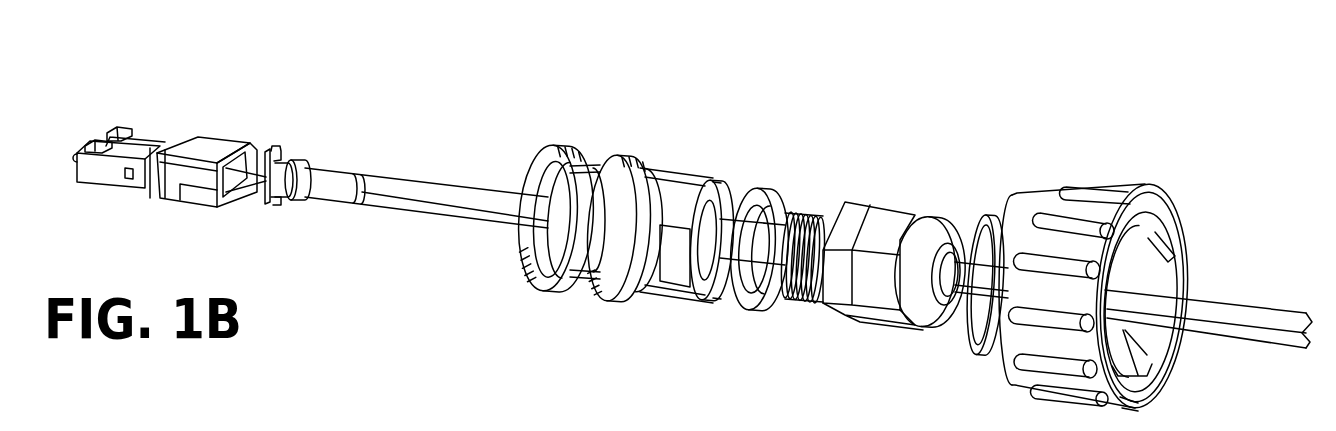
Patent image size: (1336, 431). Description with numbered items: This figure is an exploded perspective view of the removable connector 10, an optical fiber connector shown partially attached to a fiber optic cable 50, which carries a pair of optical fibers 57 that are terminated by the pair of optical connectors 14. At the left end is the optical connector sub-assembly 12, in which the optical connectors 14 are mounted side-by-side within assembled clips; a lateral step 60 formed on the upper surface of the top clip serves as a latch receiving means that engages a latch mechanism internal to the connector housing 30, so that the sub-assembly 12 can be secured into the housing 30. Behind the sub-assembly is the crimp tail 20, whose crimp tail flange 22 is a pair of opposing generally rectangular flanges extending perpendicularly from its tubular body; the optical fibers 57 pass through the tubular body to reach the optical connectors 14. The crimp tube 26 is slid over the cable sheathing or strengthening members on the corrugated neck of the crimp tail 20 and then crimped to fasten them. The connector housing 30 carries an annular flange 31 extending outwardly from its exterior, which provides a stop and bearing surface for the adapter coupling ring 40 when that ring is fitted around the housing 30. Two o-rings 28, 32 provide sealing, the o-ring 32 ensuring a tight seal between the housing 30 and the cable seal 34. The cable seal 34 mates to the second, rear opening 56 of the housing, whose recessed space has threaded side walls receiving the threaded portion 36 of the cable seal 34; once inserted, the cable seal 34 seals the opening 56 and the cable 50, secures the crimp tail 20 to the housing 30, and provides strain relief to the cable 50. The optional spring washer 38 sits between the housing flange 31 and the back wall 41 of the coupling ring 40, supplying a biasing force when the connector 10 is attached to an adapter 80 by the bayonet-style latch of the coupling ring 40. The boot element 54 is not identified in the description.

The removable connector 10 is at (1127, 70).
The optical connector sub-assembly 12 is at (203, 105).
The optical connectors 14 is at (158, 140).
The crimp tail 20 is at (284, 152).
The crimp tail flange 22 is at (268, 208).
The crimp tube 26 is at (337, 190).
The o-ring 28 is at (550, 285).
The connector housing 30 is at (643, 266).
The annular flange 31 is at (627, 150).
The o-ring 32 is at (775, 197).
The cable seal 34 is at (893, 217).
The threaded portion 36 is at (803, 298).
The spring washer 38 is at (975, 345).
The adapter coupling ring 40 is at (1170, 217).
The back wall 41 is at (1128, 328).
The fiber optic cable 50 is at (1265, 320).
The boot 54 is at (200, 199).
The second, rear opening 56 is at (710, 265).
The optical fibers 57 is at (238, 194).
The lateral step 60 is at (160, 196).
The adapter 80 is at (263, 421).